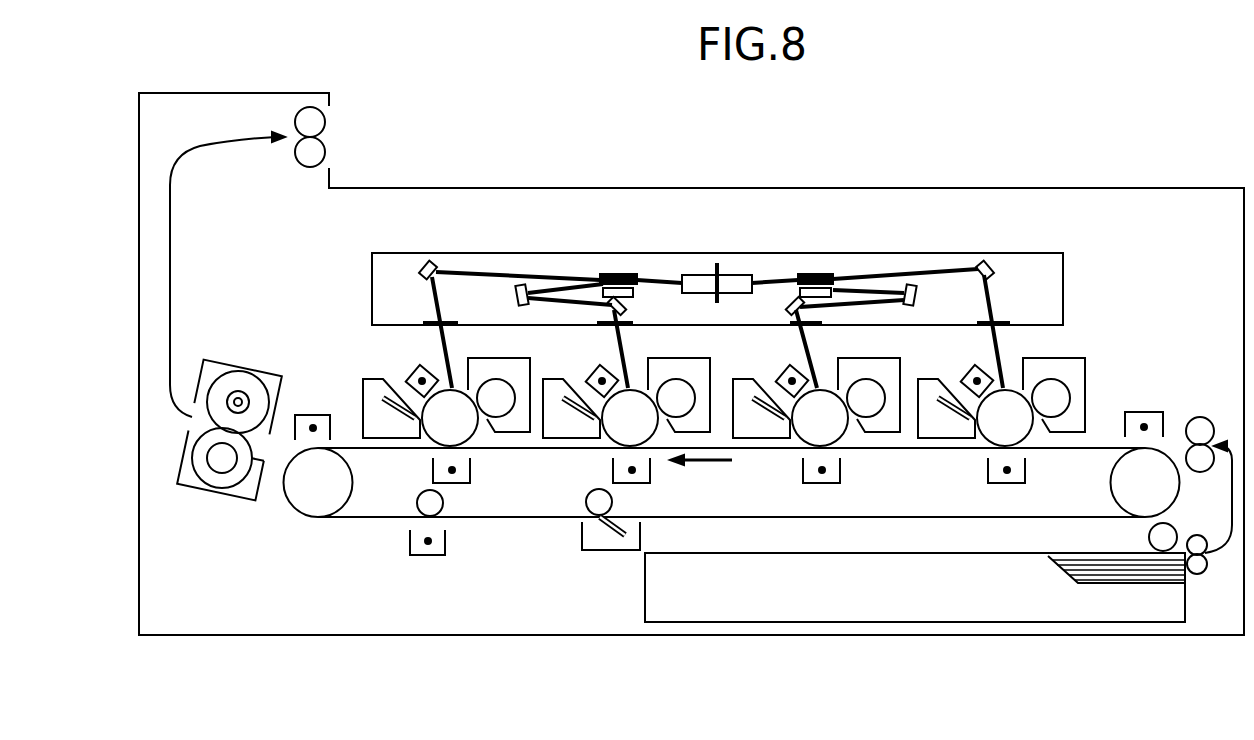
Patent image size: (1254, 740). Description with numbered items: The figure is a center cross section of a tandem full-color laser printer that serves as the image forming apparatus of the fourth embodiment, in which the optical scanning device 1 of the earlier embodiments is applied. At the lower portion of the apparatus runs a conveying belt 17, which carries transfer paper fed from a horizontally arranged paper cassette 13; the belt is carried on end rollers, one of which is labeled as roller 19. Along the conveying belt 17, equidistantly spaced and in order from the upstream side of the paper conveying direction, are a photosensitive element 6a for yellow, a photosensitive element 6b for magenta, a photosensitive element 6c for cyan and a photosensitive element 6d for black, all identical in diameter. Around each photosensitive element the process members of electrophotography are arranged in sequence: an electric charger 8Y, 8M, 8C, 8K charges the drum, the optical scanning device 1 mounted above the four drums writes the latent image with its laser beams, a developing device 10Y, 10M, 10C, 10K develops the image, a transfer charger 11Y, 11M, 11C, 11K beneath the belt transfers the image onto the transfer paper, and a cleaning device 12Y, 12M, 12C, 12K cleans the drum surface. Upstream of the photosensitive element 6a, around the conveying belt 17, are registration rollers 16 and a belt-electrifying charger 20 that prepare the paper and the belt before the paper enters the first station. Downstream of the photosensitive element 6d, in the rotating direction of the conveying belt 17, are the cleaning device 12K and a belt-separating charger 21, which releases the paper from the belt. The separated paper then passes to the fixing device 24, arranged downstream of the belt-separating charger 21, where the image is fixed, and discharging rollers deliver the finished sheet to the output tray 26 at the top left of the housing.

The output tray 26 is at (672, 187).
The optical scanning device 1 is at (1022, 253).
The photosensitive element for yellow 6a is at (1011, 406).
The photosensitive element for magenta 6b is at (826, 406).
The photosensitive element for cyan 6c is at (636, 406).
The photosensitive element for black 6d is at (456, 406).
The electric charger 8K is at (410, 368).
The electric charger 8C is at (590, 368).
The electric charger 8M is at (780, 368).
The electric charger 8Y is at (965, 368).
The developing device 10K is at (497, 359).
The developing device 10C is at (677, 359).
The developing device 10M is at (867, 359).
The developing device 10Y is at (1052, 359).
The transfer charger 11K is at (470, 470).
The transfer charger 11C is at (650, 470).
The transfer charger 11M is at (840, 470).
The transfer charger 11Y is at (1025, 470).
The cleaning device 12K is at (390, 440).
The cleaning device 12C is at (570, 440).
The cleaning device 12M is at (760, 440).
The cleaning device 12Y is at (945, 440).
The paper cassette 13 is at (645, 592).
The registration rollers 16 is at (1198, 417).
The conveying belt 17 is at (837, 518).
The belt drive roller 19 is at (1112, 486).
The belt-electrifying charger 20 is at (1146, 412).
The belt-separating charger 21 is at (311, 415).
The fixing device 24 is at (228, 500).